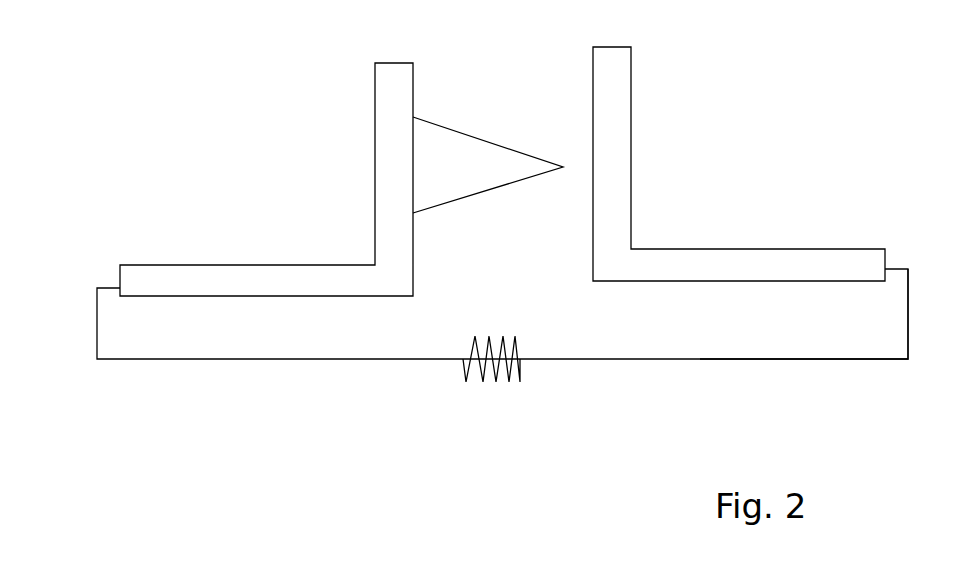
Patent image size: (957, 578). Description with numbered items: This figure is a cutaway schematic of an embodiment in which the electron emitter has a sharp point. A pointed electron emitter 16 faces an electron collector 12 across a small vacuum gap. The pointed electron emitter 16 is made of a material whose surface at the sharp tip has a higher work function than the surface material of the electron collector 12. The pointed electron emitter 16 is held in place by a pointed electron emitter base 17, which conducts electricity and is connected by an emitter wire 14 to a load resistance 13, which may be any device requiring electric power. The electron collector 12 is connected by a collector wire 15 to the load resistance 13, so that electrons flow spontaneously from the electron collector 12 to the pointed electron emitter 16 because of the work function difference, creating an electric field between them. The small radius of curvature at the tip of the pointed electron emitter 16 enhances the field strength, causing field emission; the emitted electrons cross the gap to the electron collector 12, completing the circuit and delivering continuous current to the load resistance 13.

The electron collector 12 is at (795, 242).
The load resistance 13 is at (502, 385).
The emitter wire 14 is at (130, 369).
The collector wire 15 is at (822, 368).
The pointed electron emitter 16 is at (524, 143).
The pointed electron emitter base 17 is at (208, 257).